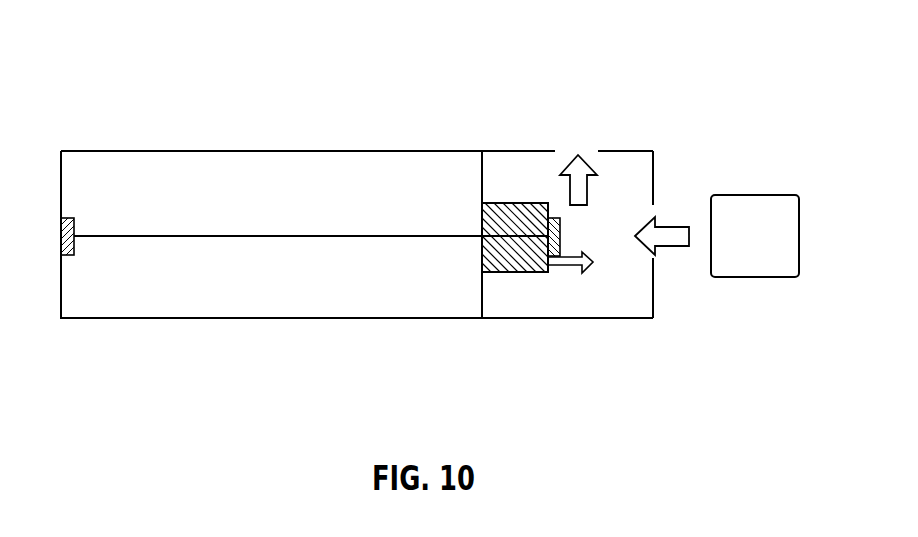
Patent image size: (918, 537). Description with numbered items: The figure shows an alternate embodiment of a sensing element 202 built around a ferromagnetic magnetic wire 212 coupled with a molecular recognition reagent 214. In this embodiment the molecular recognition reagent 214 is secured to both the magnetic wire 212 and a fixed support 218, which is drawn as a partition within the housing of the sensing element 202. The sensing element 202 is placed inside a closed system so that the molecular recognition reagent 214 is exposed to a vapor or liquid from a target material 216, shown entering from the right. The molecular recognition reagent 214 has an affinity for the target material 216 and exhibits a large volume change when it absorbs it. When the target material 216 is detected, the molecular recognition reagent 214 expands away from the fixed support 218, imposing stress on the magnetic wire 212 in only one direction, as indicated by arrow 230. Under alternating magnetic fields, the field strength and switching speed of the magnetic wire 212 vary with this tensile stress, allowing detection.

The sensing element 202 is at (605, 100).
The magnetic wire 212 is at (375, 235).
The molecular recognition reagent 214 is at (535, 203).
The target material 216 is at (788, 195).
The fixed support 218 is at (482, 293).
The arrow 230 is at (575, 274).